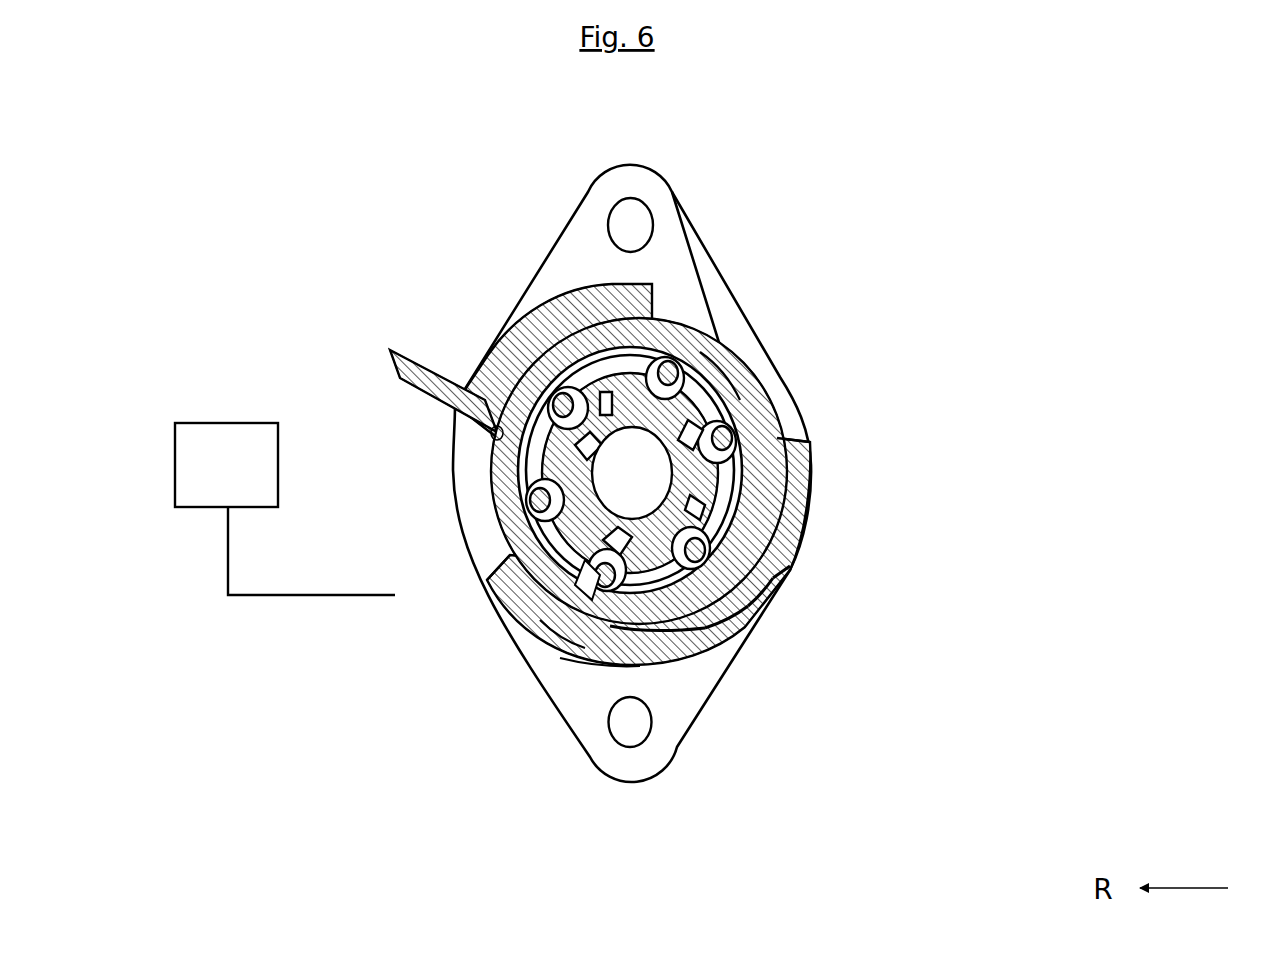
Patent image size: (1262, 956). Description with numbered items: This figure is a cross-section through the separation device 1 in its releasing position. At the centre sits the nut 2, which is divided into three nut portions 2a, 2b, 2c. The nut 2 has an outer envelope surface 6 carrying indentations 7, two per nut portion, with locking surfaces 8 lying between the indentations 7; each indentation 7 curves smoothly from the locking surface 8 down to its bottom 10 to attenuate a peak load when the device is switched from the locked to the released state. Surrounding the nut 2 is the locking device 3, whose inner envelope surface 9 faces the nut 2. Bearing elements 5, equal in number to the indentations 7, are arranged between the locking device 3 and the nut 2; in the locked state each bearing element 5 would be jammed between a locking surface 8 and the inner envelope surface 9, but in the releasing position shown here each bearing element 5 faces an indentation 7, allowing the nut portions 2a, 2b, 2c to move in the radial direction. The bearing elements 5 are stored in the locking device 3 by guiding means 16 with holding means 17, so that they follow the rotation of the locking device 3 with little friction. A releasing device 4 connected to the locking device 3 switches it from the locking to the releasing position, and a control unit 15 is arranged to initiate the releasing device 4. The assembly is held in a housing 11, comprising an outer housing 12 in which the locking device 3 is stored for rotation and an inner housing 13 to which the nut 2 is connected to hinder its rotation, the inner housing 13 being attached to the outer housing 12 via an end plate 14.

The separation device 1 is at (332, 263).
The nut 2 is at (738, 413).
The nut portion 2a is at (705, 385).
The nut portion 2b is at (807, 437).
The nut portion 2c is at (492, 430).
The locking device 3 is at (794, 525).
The releasing device 4 is at (399, 344).
The bearing elements 5 is at (743, 624).
The outer envelope surface 6 is at (567, 648).
The indentations 7 is at (522, 647).
The locking surfaces 8 is at (605, 662).
The inner envelope surface 9 is at (690, 352).
The bottom of the indentation 10 is at (763, 610).
The housing 11 is at (676, 669).
The outer housing 12 is at (648, 666).
The inner housing 13 is at (785, 572).
The end plate 14 is at (609, 688).
The control unit 15 is at (285, 509).
The guiding means 16 is at (698, 493).
The holding means 17 is at (698, 493).